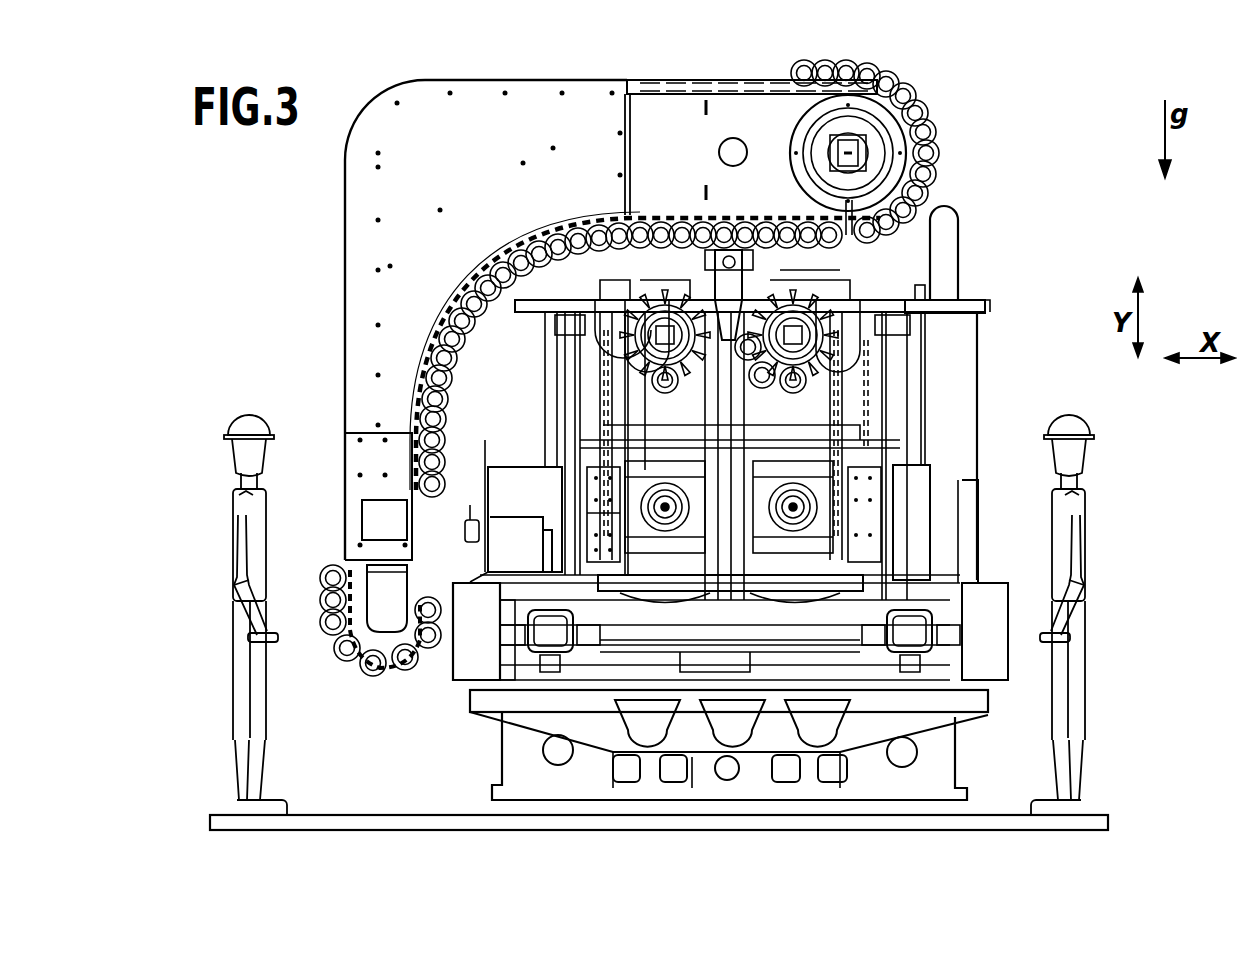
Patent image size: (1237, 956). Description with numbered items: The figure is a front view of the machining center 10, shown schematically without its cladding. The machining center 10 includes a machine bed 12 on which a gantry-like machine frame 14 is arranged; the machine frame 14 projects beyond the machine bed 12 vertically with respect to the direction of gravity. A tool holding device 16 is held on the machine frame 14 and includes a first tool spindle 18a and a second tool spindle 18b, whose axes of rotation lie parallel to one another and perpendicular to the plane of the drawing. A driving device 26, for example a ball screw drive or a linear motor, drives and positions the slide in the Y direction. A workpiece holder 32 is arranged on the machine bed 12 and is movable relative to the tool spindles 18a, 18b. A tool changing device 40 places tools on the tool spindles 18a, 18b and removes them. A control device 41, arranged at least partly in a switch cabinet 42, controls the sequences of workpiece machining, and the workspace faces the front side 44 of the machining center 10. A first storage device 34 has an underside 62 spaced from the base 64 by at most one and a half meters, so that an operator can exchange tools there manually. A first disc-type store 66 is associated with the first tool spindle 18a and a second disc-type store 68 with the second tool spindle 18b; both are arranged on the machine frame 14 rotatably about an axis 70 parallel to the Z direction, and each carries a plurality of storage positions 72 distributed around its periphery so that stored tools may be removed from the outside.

The machining center 10 is at (975, 170).
The machine bed 12 is at (940, 770).
The machine frame 14 is at (895, 257).
The tool holding device 16 is at (880, 560).
The first tool spindle 18a is at (660, 500).
The second tool spindle 18b is at (815, 490).
The driving device 26 is at (945, 268).
The workpiece holder 32 is at (465, 668).
The first storage device 34 is at (900, 58).
The tool changing device 40 is at (767, 283).
The control device 41 is at (958, 380).
The switch cabinet 42 is at (977, 425).
The front side 44 is at (810, 718).
The underside 62 is at (384, 675).
The base 64 is at (342, 830).
The first disc-type store 66 is at (678, 310).
The second disc-type store 68 is at (885, 357).
The axis of rotation 70 is at (650, 320).
The storage positions 72 is at (615, 325).